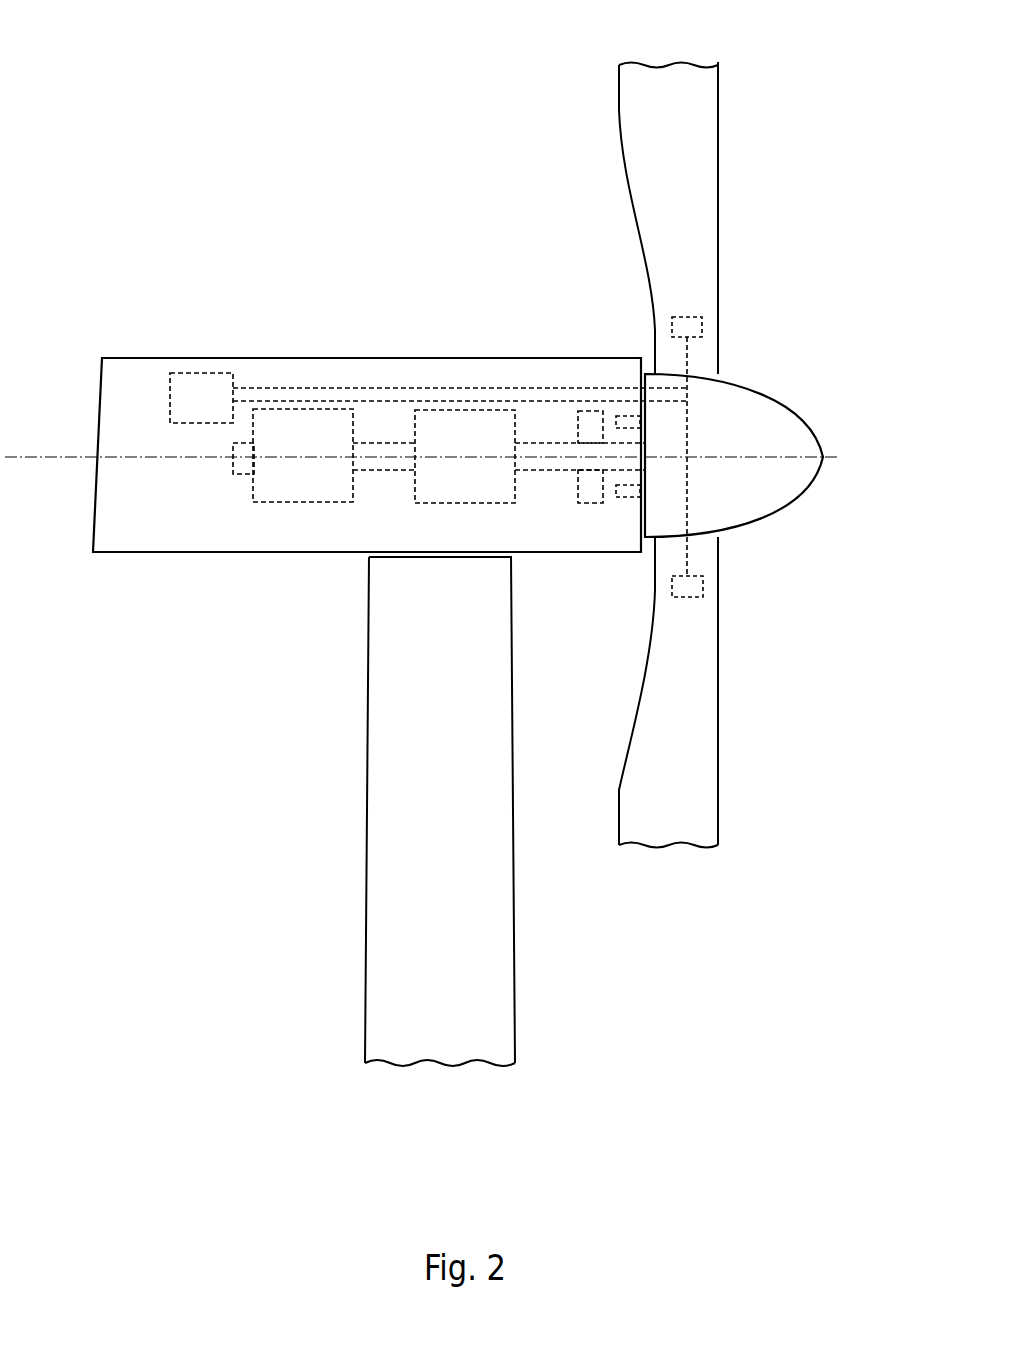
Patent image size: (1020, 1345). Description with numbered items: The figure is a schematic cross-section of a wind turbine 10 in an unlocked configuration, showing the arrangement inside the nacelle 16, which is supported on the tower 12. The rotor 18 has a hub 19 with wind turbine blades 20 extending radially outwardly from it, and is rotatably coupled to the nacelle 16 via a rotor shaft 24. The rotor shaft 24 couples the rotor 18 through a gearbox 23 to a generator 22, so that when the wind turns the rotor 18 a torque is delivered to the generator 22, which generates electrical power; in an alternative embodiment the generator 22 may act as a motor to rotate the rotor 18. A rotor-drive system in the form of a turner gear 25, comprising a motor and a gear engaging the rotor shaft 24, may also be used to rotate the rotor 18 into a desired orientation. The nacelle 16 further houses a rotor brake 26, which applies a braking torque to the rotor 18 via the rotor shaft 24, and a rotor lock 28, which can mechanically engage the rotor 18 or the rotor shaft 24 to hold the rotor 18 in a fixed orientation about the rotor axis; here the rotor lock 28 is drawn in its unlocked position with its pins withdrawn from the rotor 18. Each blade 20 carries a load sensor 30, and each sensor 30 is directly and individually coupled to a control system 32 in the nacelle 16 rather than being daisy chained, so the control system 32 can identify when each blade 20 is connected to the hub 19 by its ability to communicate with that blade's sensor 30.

The wind turbine 10 is at (821, 66).
The tower 12 is at (474, 1032).
The nacelle 16 is at (128, 363).
The rotor 18 is at (838, 376).
The hub 19 is at (747, 503).
The wind turbine blade 20 is at (627, 150).
The generator 22 is at (315, 472).
The gearbox 23 is at (493, 490).
The rotor shaft 24 is at (550, 443).
The turner gear 25 is at (243, 468).
The rotor brake 26 is at (593, 495).
The rotor lock 28 is at (622, 417).
The load sensor 30 is at (702, 333).
The control system 32 is at (178, 412).